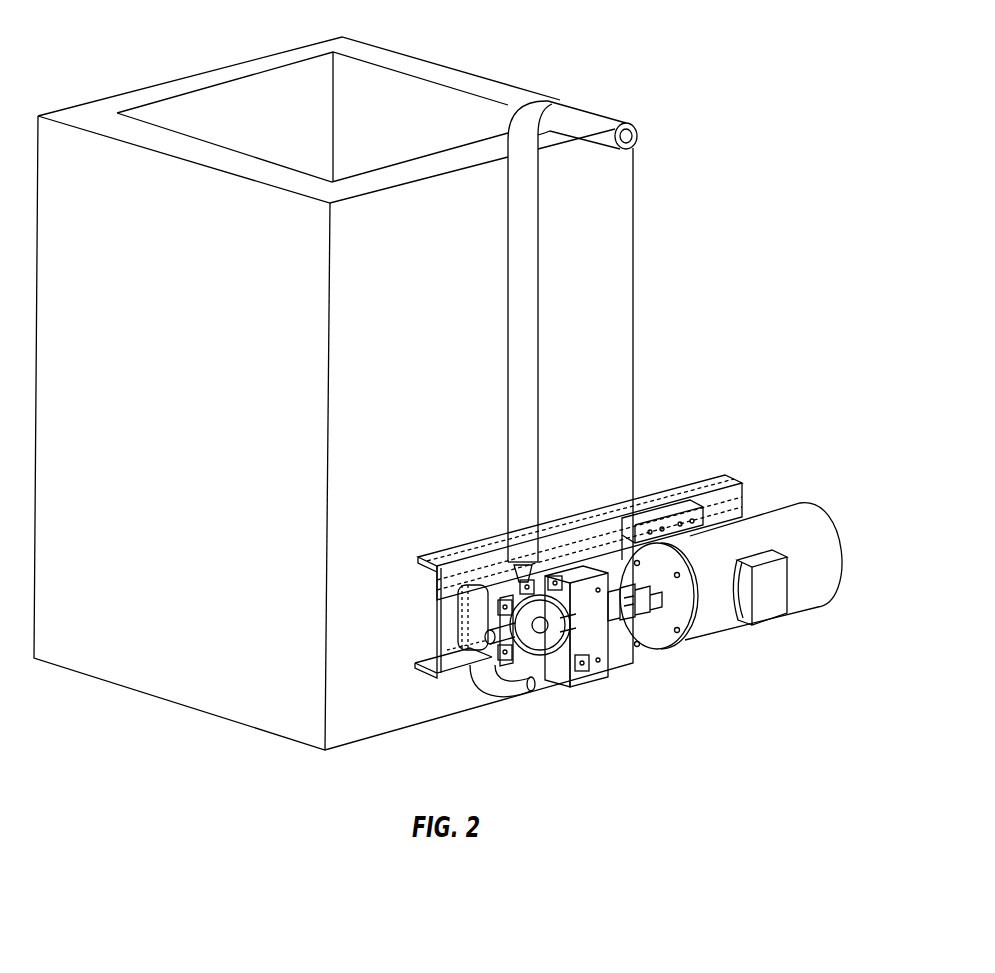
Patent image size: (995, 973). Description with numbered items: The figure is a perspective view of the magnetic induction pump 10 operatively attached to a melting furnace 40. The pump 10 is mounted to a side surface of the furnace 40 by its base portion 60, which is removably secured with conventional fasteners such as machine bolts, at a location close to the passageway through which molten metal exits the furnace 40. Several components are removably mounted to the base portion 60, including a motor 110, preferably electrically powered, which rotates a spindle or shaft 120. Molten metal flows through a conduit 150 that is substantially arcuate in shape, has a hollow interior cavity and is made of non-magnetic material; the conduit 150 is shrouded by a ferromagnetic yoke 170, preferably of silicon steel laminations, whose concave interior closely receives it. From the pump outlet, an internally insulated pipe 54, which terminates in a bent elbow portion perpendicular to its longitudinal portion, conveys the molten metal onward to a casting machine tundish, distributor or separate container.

The magnetic induction pump 10 is at (672, 680).
The furnace 40 is at (430, 68).
The internally insulated pipe 54 is at (593, 115).
The base portion 60 is at (603, 515).
The motor 110 is at (802, 597).
The spindle or shaft 120 is at (500, 647).
The conduit 150 is at (527, 653).
The ferromagnetic yoke 170 is at (580, 673).